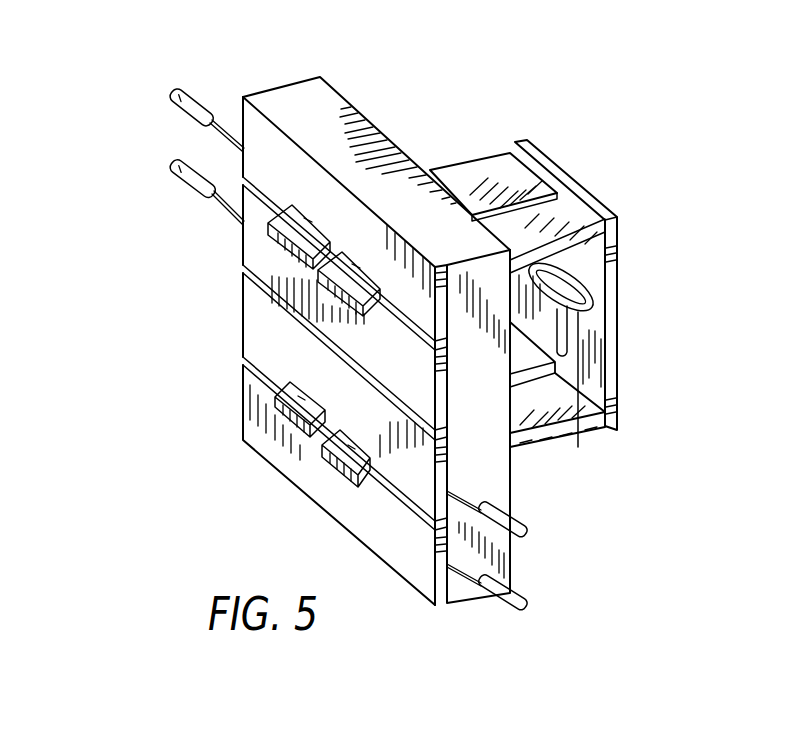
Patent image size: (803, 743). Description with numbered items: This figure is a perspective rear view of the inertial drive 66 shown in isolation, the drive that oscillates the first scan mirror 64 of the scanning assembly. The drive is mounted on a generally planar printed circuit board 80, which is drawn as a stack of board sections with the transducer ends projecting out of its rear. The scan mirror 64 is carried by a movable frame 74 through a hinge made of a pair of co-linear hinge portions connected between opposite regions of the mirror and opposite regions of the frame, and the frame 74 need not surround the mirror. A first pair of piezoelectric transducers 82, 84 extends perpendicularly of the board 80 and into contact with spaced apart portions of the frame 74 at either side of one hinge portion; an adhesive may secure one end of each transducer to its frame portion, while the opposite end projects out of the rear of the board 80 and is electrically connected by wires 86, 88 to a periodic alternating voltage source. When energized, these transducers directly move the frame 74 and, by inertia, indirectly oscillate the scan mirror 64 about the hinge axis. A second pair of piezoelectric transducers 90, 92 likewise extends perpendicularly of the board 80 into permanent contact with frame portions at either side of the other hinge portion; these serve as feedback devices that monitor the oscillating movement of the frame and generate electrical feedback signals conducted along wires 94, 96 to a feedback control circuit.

The inertial drive 66 is at (565, 140).
The printed circuit board 80 is at (243, 97).
The wire 86 is at (200, 108).
The wire 88 is at (190, 163).
The piezoelectric transducer 84 is at (488, 173).
The piezoelectric transducer 82 is at (568, 218).
The movable frame 74 is at (590, 276).
The first scan mirror 64 is at (578, 447).
The piezoelectric transducer 92 is at (512, 380).
The piezoelectric transducer 90 is at (593, 430).
The wire 94 is at (527, 540).
The wire 96 is at (526, 612).